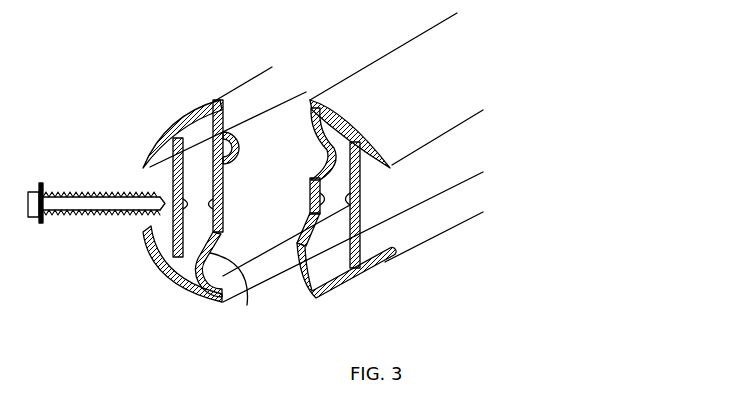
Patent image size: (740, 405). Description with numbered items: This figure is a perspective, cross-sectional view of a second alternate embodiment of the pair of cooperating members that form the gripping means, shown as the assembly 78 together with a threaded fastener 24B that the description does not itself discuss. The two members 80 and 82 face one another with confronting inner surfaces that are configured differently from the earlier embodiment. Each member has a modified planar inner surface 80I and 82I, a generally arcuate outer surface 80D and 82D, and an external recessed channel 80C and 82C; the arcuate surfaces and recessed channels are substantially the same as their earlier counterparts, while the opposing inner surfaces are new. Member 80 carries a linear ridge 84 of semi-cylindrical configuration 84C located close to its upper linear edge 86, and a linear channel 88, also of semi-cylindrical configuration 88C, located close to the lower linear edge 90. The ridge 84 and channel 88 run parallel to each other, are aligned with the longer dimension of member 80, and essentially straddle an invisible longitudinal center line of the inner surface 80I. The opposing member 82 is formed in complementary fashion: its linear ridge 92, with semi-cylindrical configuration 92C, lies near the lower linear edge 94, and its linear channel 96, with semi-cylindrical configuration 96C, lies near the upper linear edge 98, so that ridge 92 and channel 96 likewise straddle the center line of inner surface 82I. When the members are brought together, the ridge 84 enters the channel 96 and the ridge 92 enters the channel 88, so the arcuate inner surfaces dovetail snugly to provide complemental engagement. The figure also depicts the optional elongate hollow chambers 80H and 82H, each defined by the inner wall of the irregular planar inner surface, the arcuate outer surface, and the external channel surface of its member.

The rail and tube assembly 78 is at (103, 404).
The screw 24B is at (75, 192).
The member 80 is at (186, 174).
The hollow chamber 80H is at (187, 117).
The arcuate outer surface 80D is at (147, 157).
The external recessed channel 80C is at (177, 182).
The planar inner surface 80I is at (241, 215).
The linear ridge 84 is at (222, 152).
The semi-cylindrical configuration 84C is at (240, 125).
The upper linear edge 86 is at (248, 80).
The linear channel 88 is at (248, 288).
The semi-cylindrical configuration 88C is at (176, 262).
The lower linear edge 90 is at (265, 278).
The opposing member 82 is at (401, 196).
The hollow chamber 82H is at (347, 113).
The planar inner surface 82I is at (312, 176).
The external recessed channel 82C is at (407, 190).
The arcuate outer surface 82D is at (380, 262).
The linear ridge 92 is at (313, 250).
The semi-cylindrical configuration 92C is at (284, 242).
The lower linear edge 94 is at (312, 300).
The linear channel 96 is at (310, 132).
The semi-cylindrical configuration 96C is at (337, 98).
The upper linear edge 98 is at (395, 50).